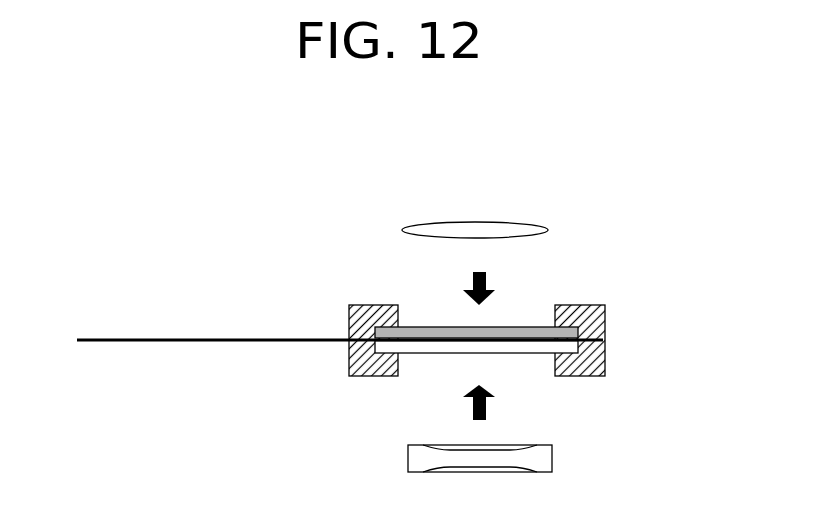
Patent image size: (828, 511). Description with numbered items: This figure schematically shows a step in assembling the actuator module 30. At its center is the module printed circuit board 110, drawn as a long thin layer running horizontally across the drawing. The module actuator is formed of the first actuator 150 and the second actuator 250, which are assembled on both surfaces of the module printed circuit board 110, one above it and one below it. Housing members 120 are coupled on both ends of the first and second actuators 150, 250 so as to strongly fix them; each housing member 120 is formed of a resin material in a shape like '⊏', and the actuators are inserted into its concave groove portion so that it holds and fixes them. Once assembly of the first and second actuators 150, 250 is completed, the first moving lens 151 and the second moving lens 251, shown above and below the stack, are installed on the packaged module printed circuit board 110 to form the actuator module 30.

The actuator module 30 is at (140, 153).
The module printed circuit board 110 is at (112, 338).
The housing member 120 is at (600, 347).
The first actuator 150 is at (420, 327).
The first moving lens 151 is at (435, 222).
The second actuator 250 is at (520, 348).
The second moving lens 251 is at (552, 460).